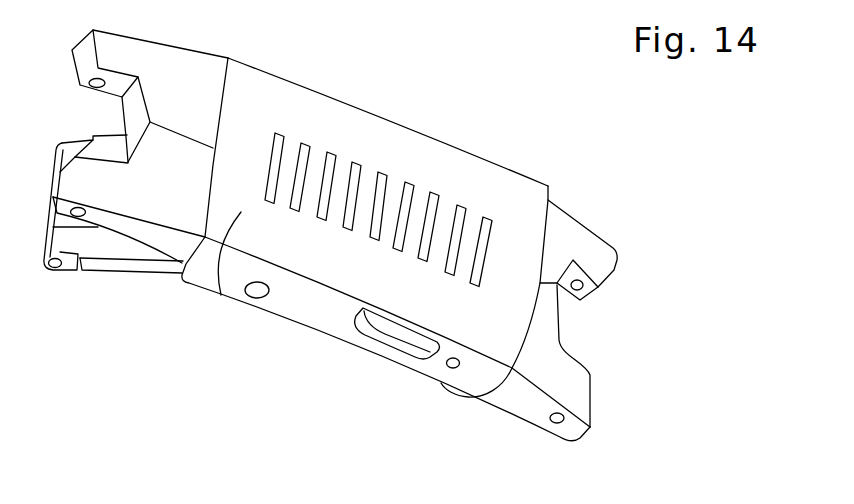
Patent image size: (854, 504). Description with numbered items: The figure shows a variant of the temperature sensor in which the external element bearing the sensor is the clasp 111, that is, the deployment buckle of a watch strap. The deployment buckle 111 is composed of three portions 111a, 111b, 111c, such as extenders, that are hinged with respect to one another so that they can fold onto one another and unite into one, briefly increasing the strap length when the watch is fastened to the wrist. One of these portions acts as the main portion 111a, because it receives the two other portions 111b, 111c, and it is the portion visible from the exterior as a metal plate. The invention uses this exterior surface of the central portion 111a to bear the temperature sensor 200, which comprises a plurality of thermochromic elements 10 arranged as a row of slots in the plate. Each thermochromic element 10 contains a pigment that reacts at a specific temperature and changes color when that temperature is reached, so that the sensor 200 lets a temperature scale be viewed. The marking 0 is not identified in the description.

The clasp 111 is at (462, 120).
The main portion 111a is at (415, 157).
The portion of the deployment buckle 111b is at (598, 248).
The portion of the deployment buckle 111c is at (120, 263).
The thermochromic element 10 is at (484, 236).
The temperature sensor 200 is at (325, 251).
The edge portion 0 is at (221, 295).